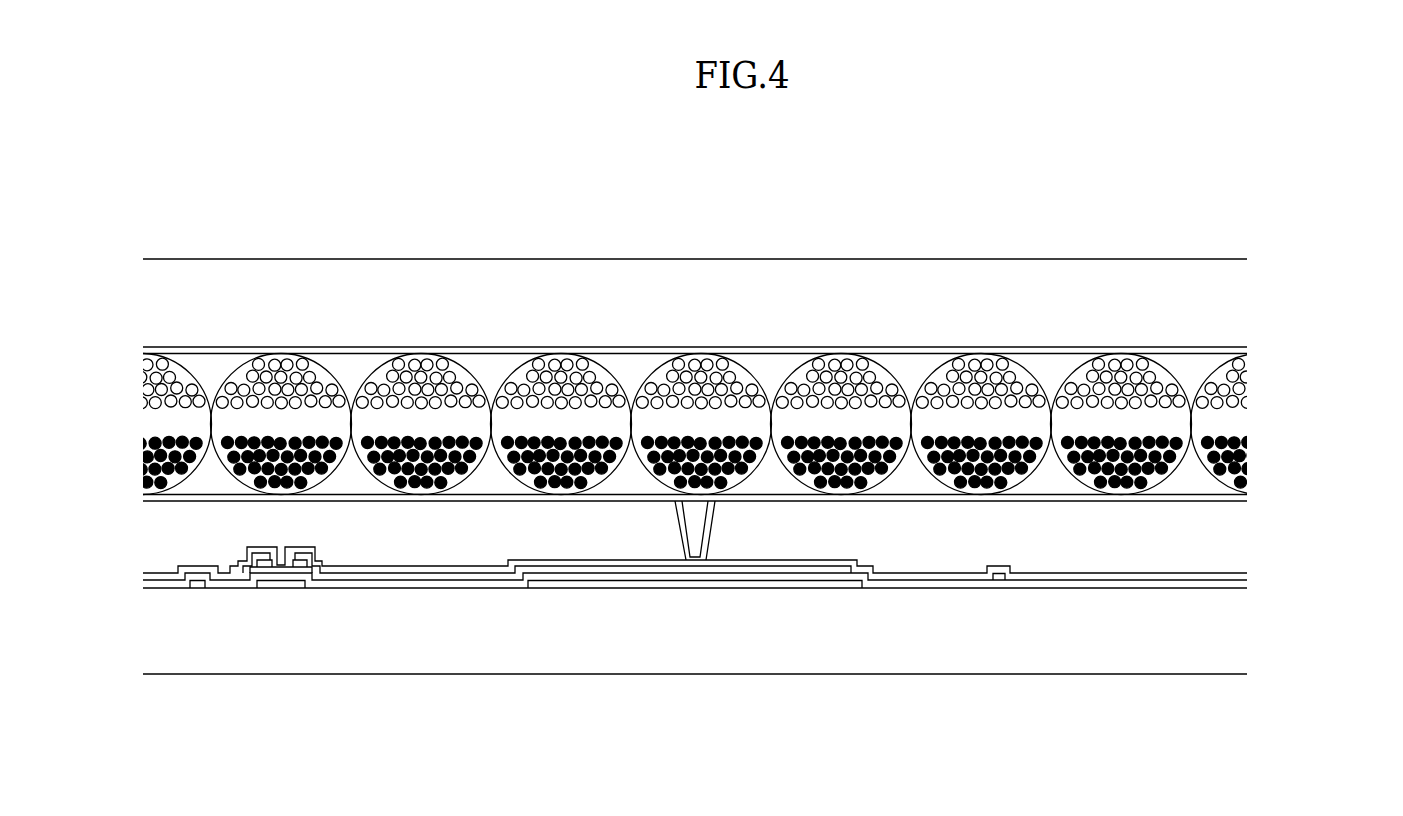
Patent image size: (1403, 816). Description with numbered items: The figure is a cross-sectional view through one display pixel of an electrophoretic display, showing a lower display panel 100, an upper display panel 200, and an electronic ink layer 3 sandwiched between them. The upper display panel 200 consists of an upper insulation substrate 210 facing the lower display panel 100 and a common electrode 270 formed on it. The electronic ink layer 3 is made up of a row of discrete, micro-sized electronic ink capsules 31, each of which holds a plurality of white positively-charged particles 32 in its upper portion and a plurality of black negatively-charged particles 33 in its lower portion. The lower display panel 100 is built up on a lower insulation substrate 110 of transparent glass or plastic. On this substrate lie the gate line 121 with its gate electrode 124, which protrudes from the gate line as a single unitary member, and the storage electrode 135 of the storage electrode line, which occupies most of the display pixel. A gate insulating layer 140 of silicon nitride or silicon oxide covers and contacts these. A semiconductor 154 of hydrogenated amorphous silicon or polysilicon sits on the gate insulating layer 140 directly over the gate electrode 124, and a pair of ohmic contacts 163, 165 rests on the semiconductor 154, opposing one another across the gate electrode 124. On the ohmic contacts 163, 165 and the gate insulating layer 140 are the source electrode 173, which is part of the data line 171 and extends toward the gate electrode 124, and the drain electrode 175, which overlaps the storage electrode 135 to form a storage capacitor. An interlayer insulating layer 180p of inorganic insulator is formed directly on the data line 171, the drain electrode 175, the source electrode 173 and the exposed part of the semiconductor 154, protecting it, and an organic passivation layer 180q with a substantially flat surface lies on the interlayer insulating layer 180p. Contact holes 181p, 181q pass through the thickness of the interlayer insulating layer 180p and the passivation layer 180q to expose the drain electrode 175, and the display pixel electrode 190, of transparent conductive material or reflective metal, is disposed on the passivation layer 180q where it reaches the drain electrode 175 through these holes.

The upper display panel 200 is at (1310, 290).
The upper insulation substrate 210 is at (1225, 305).
The common electrode 270 is at (1225, 351).
The electronic ink layer 3 is at (1310, 365).
The electronic ink capsule 31 is at (240, 365).
The white positively-charged particles 32 is at (380, 377).
The black negatively-charged particles 33 is at (457, 437).
The display pixel electrode 190 is at (1210, 495).
The lower display panel 100 is at (1310, 493).
The lower insulation substrate 110 is at (1225, 615).
The gate line 121 is at (199, 586).
The gate electrode 124 is at (280, 586).
The gate insulating layer 140 is at (383, 581).
The semiconductor 154 is at (292, 572).
The ohmic contact 163 is at (267, 565).
The ohmic contact 165 is at (302, 566).
The source electrode 173 is at (241, 578).
The drain electrode 175 is at (547, 571).
The storage electrode 135 is at (605, 584).
The data line 171 is at (1003, 581).
The interlayer insulating layer 180p is at (915, 574).
The passivation layer 180q is at (1117, 548).
The contact hole 181p is at (700, 568).
The contact hole 181q is at (712, 532).